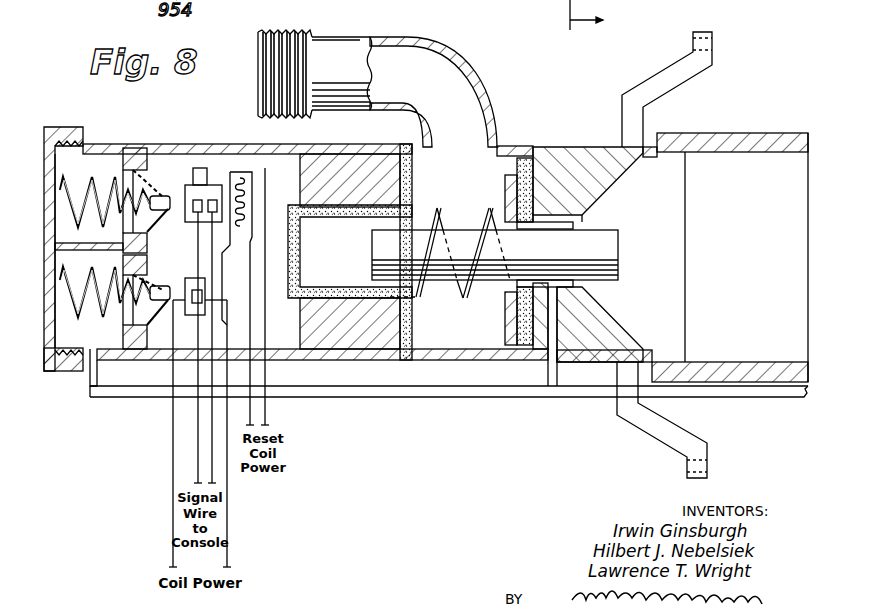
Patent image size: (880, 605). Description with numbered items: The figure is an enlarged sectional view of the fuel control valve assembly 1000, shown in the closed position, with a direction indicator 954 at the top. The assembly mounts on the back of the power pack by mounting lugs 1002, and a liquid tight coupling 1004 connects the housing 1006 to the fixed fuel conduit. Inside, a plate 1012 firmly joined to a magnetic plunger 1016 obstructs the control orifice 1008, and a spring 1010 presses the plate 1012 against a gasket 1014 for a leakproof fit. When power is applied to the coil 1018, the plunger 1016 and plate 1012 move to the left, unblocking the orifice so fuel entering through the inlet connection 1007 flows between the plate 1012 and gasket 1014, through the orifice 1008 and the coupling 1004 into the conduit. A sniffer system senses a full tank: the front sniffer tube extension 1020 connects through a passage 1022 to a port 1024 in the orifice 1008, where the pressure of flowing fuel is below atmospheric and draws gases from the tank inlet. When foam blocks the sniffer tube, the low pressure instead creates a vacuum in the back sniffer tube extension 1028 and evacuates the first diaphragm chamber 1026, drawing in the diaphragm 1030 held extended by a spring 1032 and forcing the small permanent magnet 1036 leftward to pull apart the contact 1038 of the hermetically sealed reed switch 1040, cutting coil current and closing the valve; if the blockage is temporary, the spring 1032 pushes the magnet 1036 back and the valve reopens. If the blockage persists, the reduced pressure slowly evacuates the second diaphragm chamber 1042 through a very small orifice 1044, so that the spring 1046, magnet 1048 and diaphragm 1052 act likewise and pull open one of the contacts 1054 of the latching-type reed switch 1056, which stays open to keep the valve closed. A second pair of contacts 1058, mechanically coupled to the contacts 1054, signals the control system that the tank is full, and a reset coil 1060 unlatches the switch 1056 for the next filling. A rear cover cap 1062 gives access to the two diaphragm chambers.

The direction arrow 954 is at (627, 0).
The fuel control valve assembly 1000 is at (430, 397).
The mounting lugs 1002 is at (657, 73).
The liquid tight coupling 1004 is at (733, 133).
The housing 1006 is at (363, 365).
The inlet connection 1007 is at (337, 35).
The control orifice 1008 is at (573, 224).
The spring 1010 is at (462, 272).
The plate 1012 is at (507, 187).
The gasket 1014 is at (513, 344).
The magnetic plunger 1016 is at (555, 257).
The coil 1018 is at (343, 338).
The front sniffer tube extension 1020 is at (718, 397).
The passage 1022 is at (547, 370).
The port 1024 is at (573, 284).
The first diaphragm chamber 1026 is at (80, 333).
The back sniffer tube extension 1028 is at (298, 395).
The diaphragm 1030 is at (148, 347).
The spring 1032 is at (107, 288).
The small permanent magnet 1036 is at (164, 288).
The contact 1038 is at (186, 296).
The hermetically sealed reed switch 1040 is at (204, 308).
The second diaphragm chamber 1042 is at (108, 167).
The very small orifice 1044 is at (113, 248).
The spring 1046 is at (83, 188).
The magnet 1048 is at (157, 188).
The diaphragm 1052 is at (167, 196).
The contacts 1054 is at (190, 212).
The hermetically sealed latching-type reed switch 1056 is at (202, 182).
The second pair of contacts 1058 is at (217, 207).
The reset coil 1060 is at (241, 190).
The rear cover cap 1062 is at (52, 126).